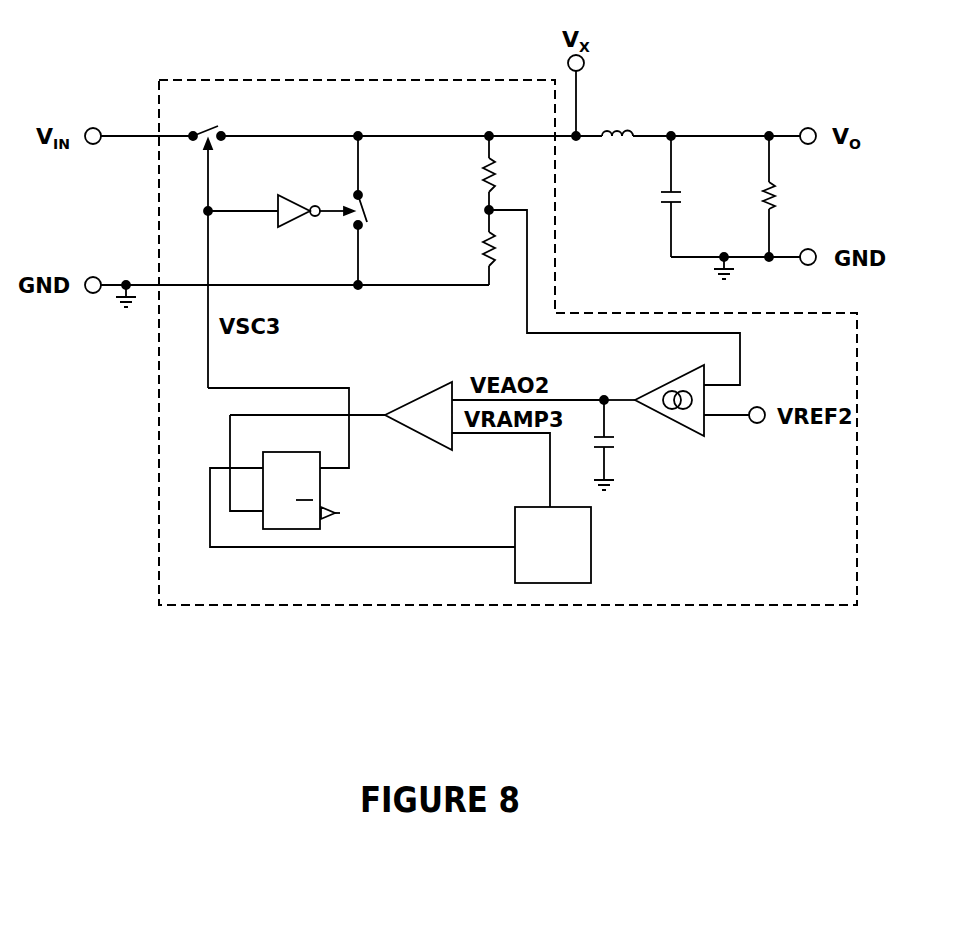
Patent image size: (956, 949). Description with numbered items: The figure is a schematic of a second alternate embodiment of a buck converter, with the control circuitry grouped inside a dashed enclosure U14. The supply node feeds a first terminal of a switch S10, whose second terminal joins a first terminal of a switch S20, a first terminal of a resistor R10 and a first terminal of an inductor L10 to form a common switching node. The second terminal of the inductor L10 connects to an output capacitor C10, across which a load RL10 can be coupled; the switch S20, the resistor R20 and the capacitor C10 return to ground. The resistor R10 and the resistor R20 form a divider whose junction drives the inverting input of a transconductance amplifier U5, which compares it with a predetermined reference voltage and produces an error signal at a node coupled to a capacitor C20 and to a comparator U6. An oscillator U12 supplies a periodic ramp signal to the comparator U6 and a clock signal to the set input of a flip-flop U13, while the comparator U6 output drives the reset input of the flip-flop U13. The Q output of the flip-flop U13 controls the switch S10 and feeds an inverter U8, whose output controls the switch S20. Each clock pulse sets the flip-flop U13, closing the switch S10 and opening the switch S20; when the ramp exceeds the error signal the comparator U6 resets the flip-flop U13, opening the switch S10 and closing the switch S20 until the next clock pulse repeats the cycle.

The switching regulator control circuit (dashed enclosure) U14 is at (389, 76).
The switch S10 is at (206, 119).
The inverter U8 is at (281, 199).
The switch S20 is at (384, 212).
The resistor R10 is at (465, 173).
The resistor R20 is at (463, 247).
The inductor L10 is at (613, 116).
The capacitor C10 is at (700, 194).
The load RL10 is at (807, 196).
The comparator U6 is at (418, 404).
The flip-flop U13 is at (301, 478).
The oscillator U12 is at (579, 545).
The transconductance amplifier U5 is at (669, 391).
The capacitor C20 is at (632, 445).